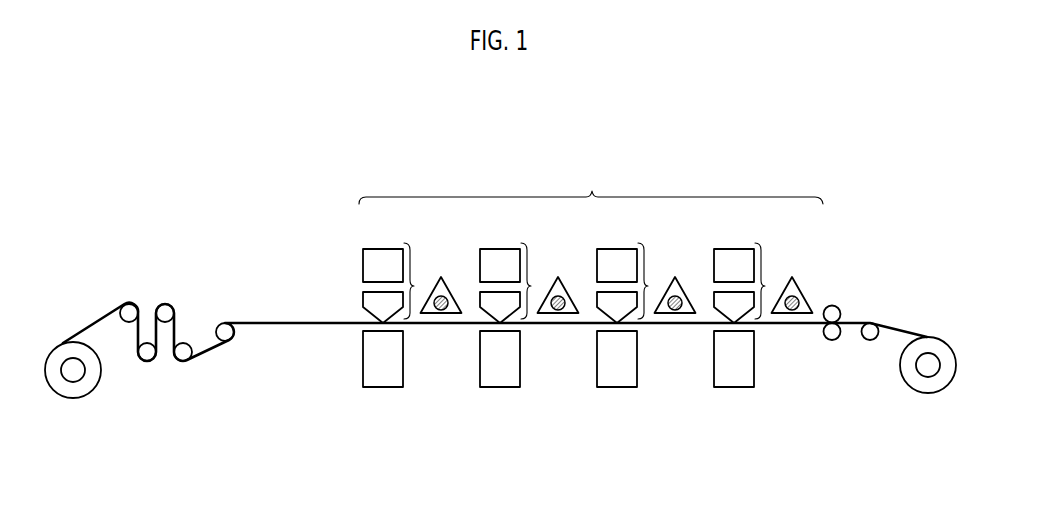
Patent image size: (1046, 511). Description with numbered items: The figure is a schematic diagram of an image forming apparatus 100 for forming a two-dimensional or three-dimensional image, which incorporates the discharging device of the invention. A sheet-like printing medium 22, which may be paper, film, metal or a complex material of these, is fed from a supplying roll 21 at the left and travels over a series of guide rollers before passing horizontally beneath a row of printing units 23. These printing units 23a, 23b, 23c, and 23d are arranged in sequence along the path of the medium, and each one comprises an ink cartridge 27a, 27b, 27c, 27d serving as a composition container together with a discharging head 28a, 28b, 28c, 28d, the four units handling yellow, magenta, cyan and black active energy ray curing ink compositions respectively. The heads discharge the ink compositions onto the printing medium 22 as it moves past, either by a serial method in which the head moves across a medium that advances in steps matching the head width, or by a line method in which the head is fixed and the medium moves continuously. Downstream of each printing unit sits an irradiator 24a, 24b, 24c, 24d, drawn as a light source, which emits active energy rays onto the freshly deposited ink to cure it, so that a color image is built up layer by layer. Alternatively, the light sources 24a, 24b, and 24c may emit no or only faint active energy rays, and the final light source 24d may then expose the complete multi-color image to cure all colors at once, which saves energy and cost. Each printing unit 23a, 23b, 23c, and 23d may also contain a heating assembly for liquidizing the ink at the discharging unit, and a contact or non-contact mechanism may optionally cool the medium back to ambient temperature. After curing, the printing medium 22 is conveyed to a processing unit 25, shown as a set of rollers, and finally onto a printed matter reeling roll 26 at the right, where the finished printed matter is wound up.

The image forming apparatus 100 is at (838, 147).
The supplying roll 21 is at (73, 375).
The printing medium 22 is at (274, 322).
The printing units 23 is at (571, 274).
The printing unit 23a is at (414, 286).
The printing unit 23b is at (531, 286).
The printing unit 23c is at (648, 286).
The printing unit 23d is at (765, 286).
The irradiator 24a is at (446, 285).
The irradiator 24b is at (563, 285).
The irradiator 24c is at (681, 285).
The irradiator 24d is at (797, 285).
The processing unit 25 is at (833, 296).
The printed matter reeling roll 26 is at (928, 367).
The ink cartridge 27a is at (385, 258).
The ink cartridge 27b is at (503, 258).
The ink cartridge 27c is at (620, 258).
The ink cartridge 27d is at (736, 258).
The discharging head 28a is at (369, 313).
The discharging head 28b is at (486, 313).
The discharging head 28c is at (603, 313).
The discharging head 28d is at (720, 313).